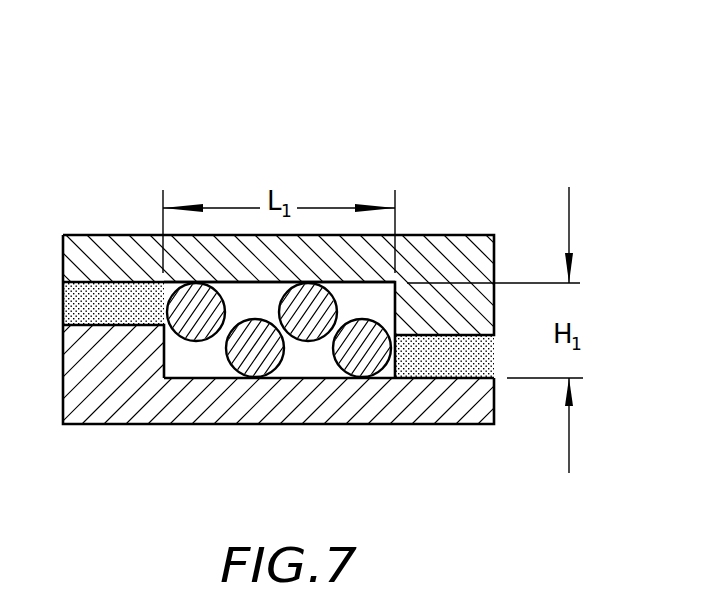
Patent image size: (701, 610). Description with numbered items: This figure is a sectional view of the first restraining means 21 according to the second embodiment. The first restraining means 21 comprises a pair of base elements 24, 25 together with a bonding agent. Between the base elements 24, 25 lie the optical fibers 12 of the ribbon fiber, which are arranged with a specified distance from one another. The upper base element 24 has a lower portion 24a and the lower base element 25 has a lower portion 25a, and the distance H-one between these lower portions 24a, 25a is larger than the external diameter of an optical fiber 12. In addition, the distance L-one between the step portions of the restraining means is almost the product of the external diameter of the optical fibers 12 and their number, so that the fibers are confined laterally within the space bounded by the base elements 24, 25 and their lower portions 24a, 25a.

The first restraining means 21 is at (294, 152).
The optical fibers 12 is at (193, 333).
The base element 24 is at (458, 237).
The lower portion 24a is at (383, 297).
The base element 25 is at (427, 426).
The lower portion 25a is at (298, 379).